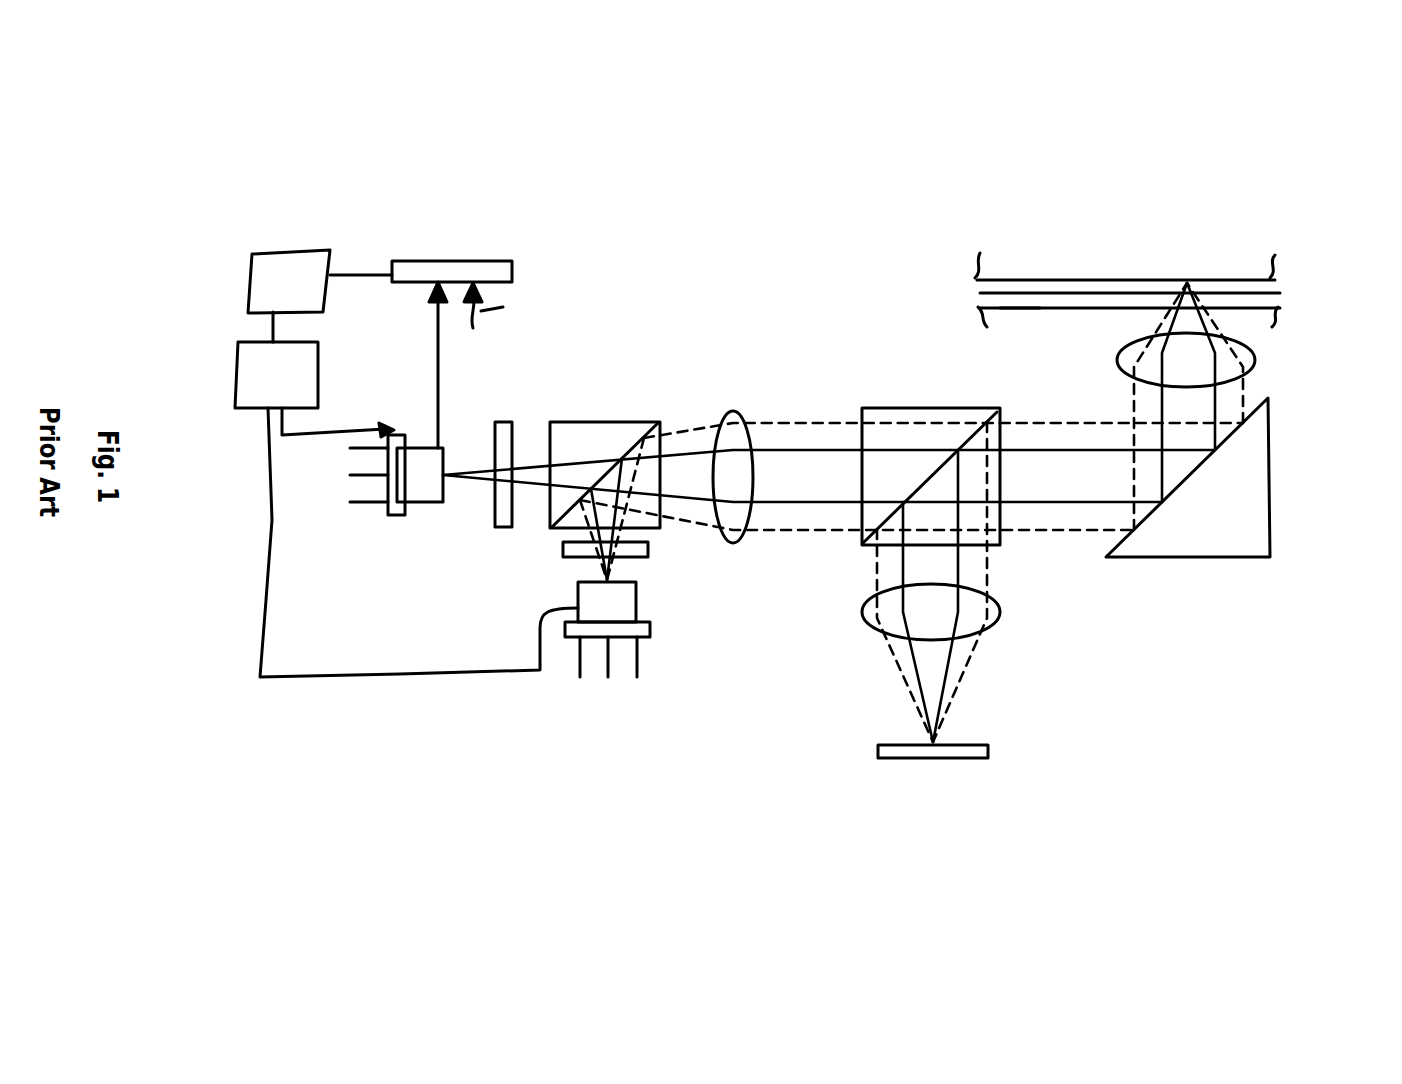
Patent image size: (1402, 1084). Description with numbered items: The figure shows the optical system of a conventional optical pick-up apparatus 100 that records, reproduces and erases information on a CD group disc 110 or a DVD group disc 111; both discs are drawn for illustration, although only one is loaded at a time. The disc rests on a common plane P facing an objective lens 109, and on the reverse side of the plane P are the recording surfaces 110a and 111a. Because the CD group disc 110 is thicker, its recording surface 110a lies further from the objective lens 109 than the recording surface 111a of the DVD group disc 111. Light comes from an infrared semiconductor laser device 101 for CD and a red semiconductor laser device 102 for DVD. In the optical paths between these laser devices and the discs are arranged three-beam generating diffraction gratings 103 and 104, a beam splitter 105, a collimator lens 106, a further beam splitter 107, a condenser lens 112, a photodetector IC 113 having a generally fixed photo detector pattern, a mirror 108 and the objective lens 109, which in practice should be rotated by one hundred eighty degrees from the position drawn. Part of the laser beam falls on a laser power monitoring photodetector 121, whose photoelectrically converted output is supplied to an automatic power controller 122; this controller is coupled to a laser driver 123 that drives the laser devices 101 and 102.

The optical pick-up apparatus 100 is at (207, 493).
The infrared semiconductor laser device 101 is at (424, 447).
The red semiconductor laser device 102 is at (552, 628).
The 3-beam generating diffraction grating 103 is at (503, 420).
The 3-beam generating diffraction grating 104 is at (637, 557).
The beam splitter 105 is at (595, 422).
The collimator lens 106 is at (733, 413).
The beam splitter 107 is at (920, 408).
The mirror 108 is at (1180, 553).
The objective lens 109 is at (1253, 347).
The CD group disc 110 is at (1057, 287).
The recording surface 110a is at (1150, 283).
The DVD group disc 111 is at (1060, 310).
The recording surface 111a is at (1083, 293).
The condenser lens 112 is at (992, 620).
The photodetector IC 113 is at (962, 758).
The laser power monitoring photodetector 121 is at (457, 261).
The automatic power controller 122 is at (278, 251).
The laser driver 123 is at (234, 380).
The common plane P is at (1020, 310).